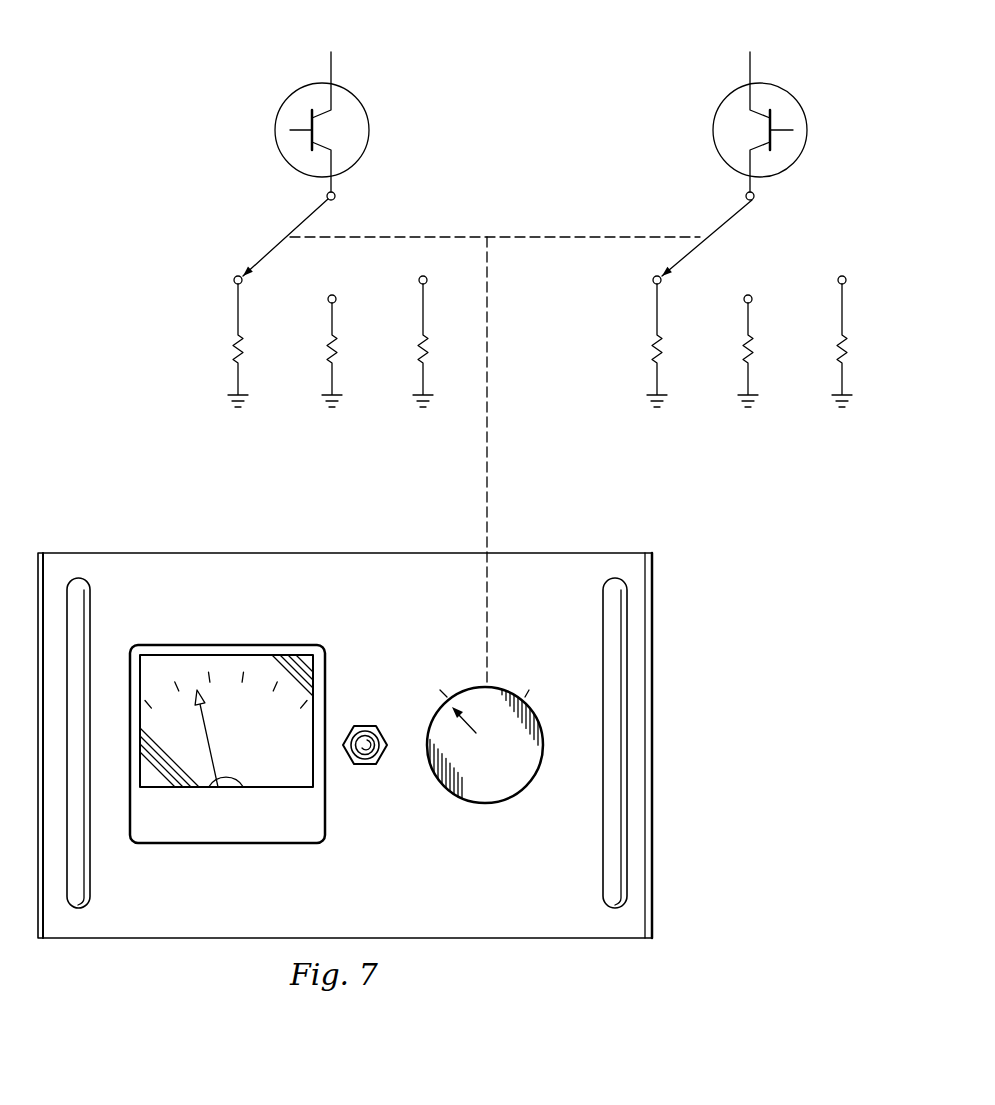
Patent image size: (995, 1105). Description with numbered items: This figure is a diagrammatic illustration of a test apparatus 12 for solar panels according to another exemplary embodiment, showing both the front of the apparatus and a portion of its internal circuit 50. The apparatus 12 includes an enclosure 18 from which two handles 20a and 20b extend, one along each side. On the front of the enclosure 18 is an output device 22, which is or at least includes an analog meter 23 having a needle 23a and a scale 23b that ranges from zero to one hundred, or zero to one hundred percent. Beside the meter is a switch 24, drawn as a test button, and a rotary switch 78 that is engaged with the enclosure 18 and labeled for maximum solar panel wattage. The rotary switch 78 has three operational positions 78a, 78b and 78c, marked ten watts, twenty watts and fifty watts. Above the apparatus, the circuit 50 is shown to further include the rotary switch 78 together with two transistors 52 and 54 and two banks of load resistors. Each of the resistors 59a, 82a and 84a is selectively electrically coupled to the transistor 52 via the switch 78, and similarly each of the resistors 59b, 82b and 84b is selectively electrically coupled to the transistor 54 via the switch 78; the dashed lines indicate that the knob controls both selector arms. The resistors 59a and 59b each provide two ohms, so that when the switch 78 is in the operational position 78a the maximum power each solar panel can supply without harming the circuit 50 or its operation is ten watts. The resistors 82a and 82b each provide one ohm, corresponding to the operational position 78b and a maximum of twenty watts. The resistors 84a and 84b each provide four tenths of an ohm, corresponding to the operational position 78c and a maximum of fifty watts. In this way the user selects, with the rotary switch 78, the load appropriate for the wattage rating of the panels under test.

The circuit 50 is at (150, 78).
The transistor 52 is at (282, 112).
The transistor 54 is at (804, 112).
The resistor 59a is at (233, 347).
The resistor 82a is at (327, 347).
The resistor 84a is at (418, 347).
The resistor 59b is at (652, 347).
The resistor 82b is at (743, 347).
The resistor 84b is at (837, 347).
The test apparatus 12 is at (245, 552).
The enclosure 18 is at (653, 795).
The handle 20a is at (614, 912).
The handle 20b is at (76, 912).
The output device 22 is at (208, 852).
The analog meter 23 is at (248, 826).
The needle 23a is at (212, 742).
The scale 23b is at (225, 676).
The switch 24 is at (365, 762).
The rotary switch 78 is at (542, 783).
The operational position 78a is at (428, 666).
The operational position 78b is at (475, 648).
The operational position 78c is at (538, 664).